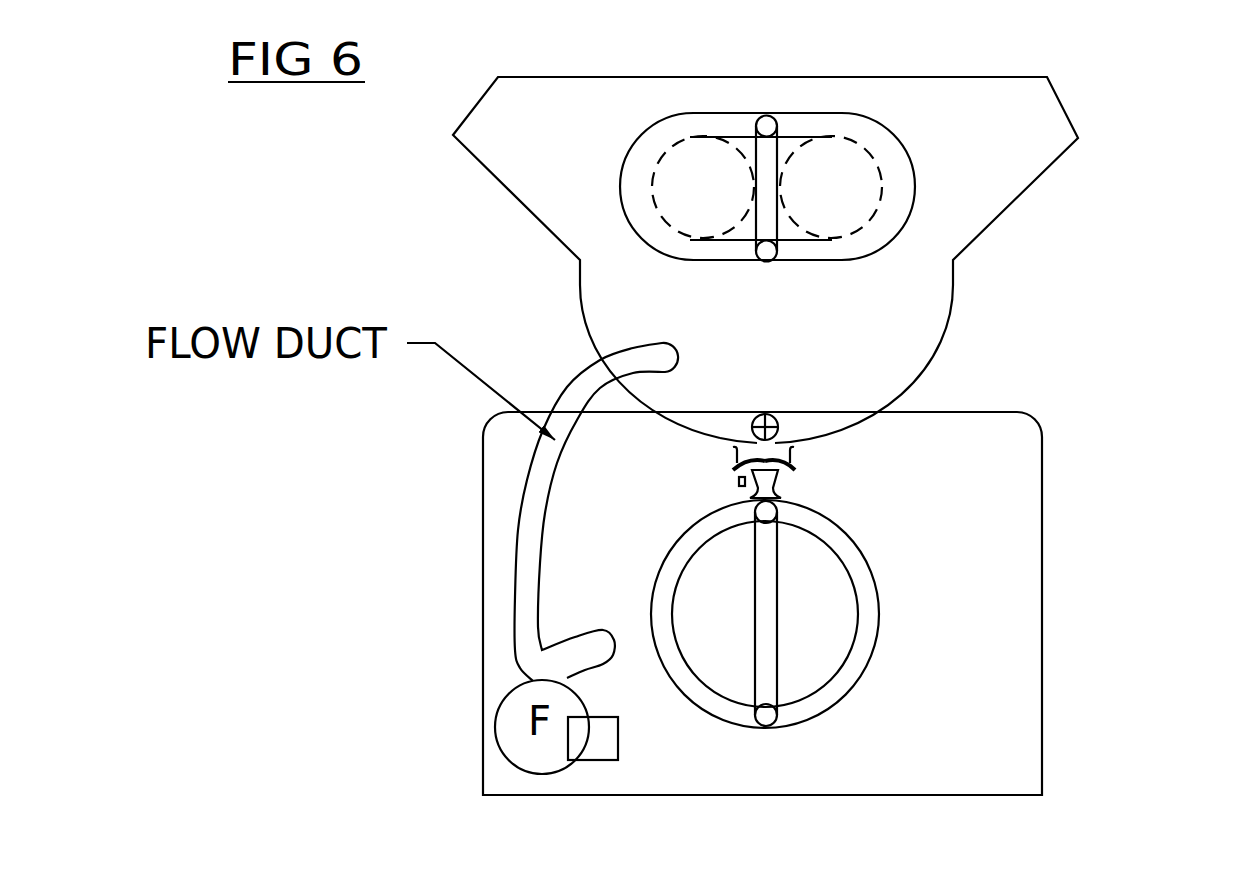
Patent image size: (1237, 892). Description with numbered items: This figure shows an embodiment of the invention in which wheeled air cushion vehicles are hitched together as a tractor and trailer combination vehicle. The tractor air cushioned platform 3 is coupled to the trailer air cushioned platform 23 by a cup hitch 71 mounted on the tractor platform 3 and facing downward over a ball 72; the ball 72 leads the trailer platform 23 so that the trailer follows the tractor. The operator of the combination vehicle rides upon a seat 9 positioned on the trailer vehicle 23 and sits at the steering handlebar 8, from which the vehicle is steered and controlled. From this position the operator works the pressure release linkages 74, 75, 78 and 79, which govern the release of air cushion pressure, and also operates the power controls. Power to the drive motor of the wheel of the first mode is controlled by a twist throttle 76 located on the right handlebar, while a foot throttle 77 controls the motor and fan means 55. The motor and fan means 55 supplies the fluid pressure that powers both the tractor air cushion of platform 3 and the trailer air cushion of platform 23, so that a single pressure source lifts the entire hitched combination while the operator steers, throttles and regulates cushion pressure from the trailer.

The tractor air cushioned platform 3 is at (940, 239).
The steering handlebar 8 is at (740, 472).
The seat 9 is at (783, 497).
The trailer air cushioned platform 23 is at (1013, 773).
The motor and fan means 55 is at (582, 760).
The cup hitch 71 is at (790, 414).
The ball 72 is at (737, 417).
The pressure release linkage 74 is at (740, 456).
The pressure release linkage 75 is at (722, 442).
The twist throttle 76 is at (797, 470).
The foot throttle 77 is at (735, 490).
The pressure release linkage 78 is at (797, 445).
The pressure release linkage 79 is at (797, 458).